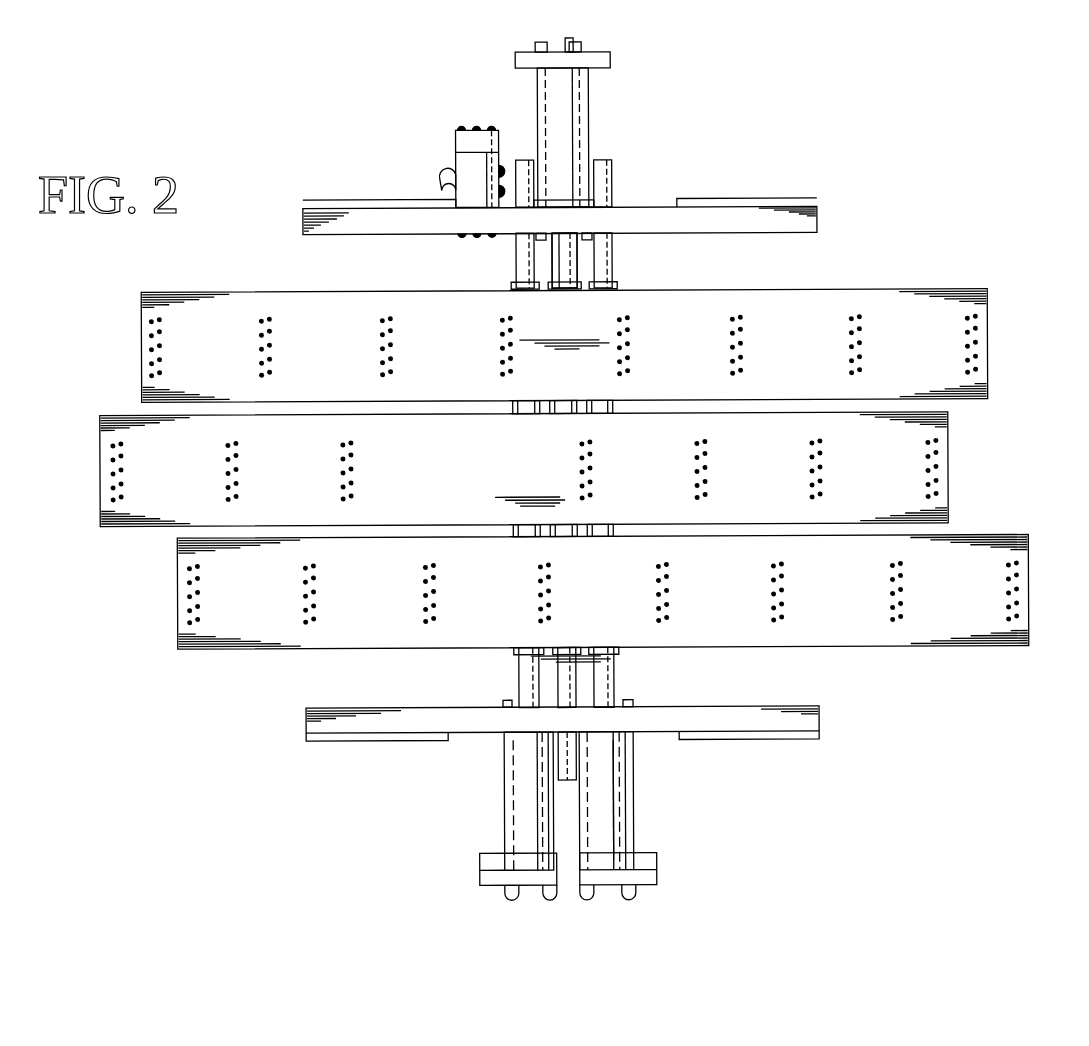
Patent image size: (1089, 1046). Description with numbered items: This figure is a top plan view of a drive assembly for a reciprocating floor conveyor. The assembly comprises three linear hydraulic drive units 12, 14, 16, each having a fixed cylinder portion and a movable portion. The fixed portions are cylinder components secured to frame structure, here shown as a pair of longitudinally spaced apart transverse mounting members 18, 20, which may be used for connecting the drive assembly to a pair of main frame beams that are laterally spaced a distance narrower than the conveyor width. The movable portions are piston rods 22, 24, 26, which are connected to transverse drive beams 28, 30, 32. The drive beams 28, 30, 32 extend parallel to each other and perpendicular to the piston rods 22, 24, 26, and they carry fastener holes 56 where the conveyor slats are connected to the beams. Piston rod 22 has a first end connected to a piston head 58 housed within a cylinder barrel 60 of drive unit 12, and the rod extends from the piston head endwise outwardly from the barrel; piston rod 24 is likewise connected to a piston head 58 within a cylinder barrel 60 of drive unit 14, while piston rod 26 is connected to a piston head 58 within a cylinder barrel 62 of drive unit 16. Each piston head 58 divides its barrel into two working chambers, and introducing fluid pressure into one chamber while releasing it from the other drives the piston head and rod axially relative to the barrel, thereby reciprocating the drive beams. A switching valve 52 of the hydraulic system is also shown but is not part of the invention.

The linear hydraulic drive unit 12 is at (612, 141).
The linear hydraulic drive unit 14 is at (640, 811).
The linear hydraulic drive unit 16 is at (476, 804).
The transverse mounting member 18 is at (335, 720).
The transverse mounting member 20 is at (348, 218).
The piston rod 22 is at (565, 258).
The piston rod 24 is at (605, 680).
The piston rod 26 is at (527, 676).
The transverse drive beam 28 is at (339, 350).
The transverse drive beam 30 is at (299, 474).
The transverse drive beam 32 is at (262, 600).
The switching valve 52 is at (470, 170).
The fastener holes 56 is at (262, 335).
The piston head 58 is at (555, 95).
The cylinder barrel 60 is at (612, 830).
The cylinder barrel 62 is at (527, 762).